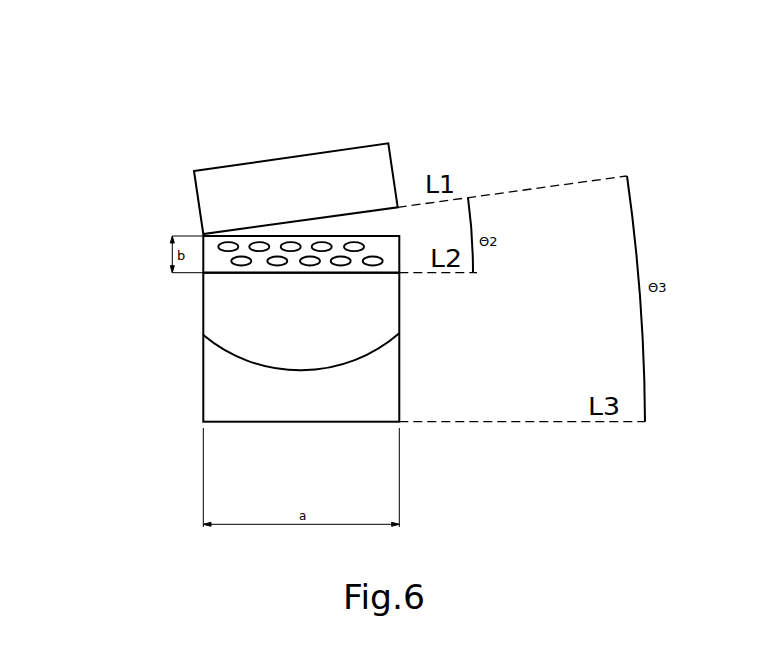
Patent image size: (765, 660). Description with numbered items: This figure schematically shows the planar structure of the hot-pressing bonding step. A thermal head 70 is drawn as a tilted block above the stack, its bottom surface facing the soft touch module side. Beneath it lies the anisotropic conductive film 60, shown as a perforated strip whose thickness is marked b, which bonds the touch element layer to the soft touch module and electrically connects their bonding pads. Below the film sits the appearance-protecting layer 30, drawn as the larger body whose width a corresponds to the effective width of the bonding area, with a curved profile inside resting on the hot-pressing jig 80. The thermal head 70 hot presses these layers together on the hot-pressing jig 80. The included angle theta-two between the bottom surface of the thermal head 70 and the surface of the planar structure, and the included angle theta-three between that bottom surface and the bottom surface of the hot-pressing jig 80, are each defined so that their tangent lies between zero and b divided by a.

The thermal head 70 is at (197, 202).
The anisotropic conductive film 60 is at (399, 255).
The appearance-protecting layer 30 is at (203, 303).
The hot-pressing jig 80 is at (203, 378).